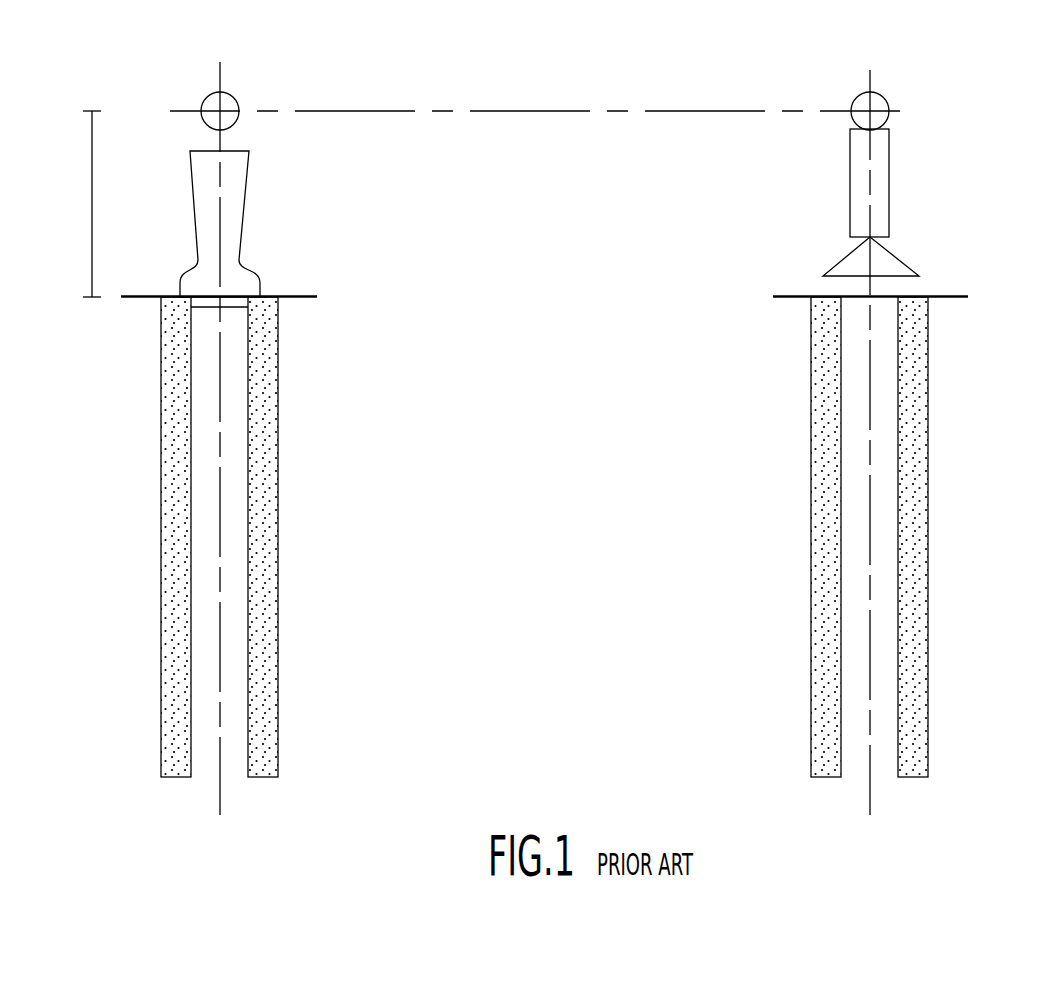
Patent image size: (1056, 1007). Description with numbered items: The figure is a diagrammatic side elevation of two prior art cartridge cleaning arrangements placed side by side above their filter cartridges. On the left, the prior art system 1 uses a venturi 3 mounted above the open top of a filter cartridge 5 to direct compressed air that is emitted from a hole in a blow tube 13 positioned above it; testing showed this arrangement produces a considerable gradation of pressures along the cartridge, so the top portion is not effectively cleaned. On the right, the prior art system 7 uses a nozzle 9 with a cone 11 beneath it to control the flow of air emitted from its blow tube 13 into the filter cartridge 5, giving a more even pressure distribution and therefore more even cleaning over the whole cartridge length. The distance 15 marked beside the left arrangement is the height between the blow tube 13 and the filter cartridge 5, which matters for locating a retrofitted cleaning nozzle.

The prior art system 1 is at (271, 214).
The venturi 3 is at (245, 213).
The filter cartridge 5 is at (270, 376).
The prior art system 7 is at (939, 194).
The nozzle 9 is at (891, 166).
The cone 11 is at (895, 258).
The blow tube 13 is at (237, 99).
The distance 15 is at (76, 204).